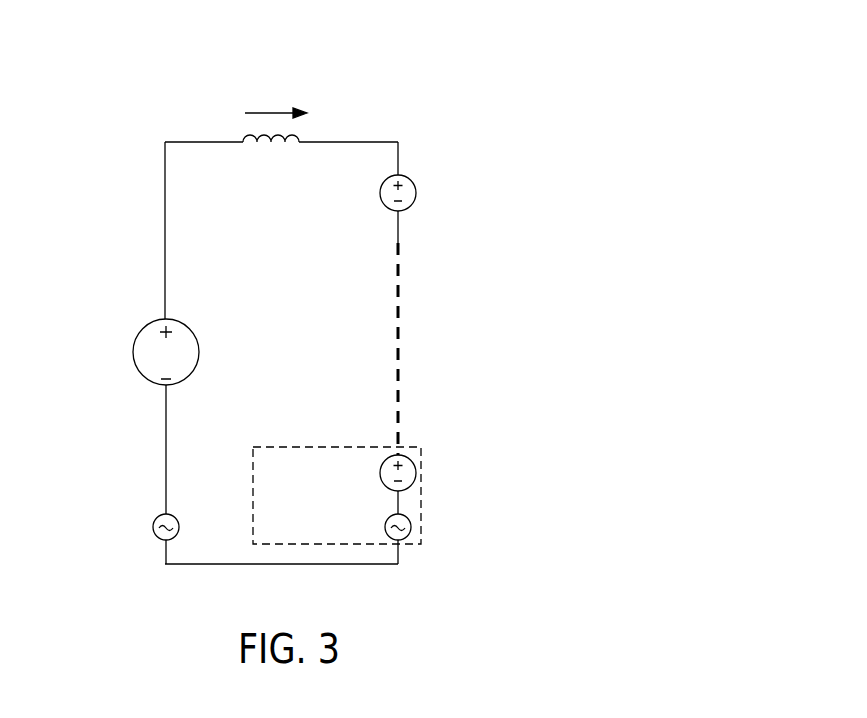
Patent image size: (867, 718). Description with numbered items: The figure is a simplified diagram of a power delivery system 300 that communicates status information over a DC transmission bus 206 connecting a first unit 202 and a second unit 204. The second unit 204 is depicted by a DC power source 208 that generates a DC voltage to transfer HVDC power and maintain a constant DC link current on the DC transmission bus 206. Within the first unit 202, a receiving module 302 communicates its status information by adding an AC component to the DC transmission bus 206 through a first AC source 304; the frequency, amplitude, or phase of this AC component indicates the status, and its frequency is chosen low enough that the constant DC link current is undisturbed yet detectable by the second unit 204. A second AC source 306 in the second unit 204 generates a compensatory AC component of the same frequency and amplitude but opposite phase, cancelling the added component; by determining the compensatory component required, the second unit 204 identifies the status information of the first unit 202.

The power delivery system diagram 300 is at (422, 77).
The first unit 202 is at (520, 295).
The second unit 204 is at (110, 411).
The DC transmission bus 206 is at (203, 142).
The DC power source 208 is at (145, 322).
The receiving module 302 is at (417, 473).
The first AC source 304 is at (410, 527).
The second AC source 306 is at (172, 515).